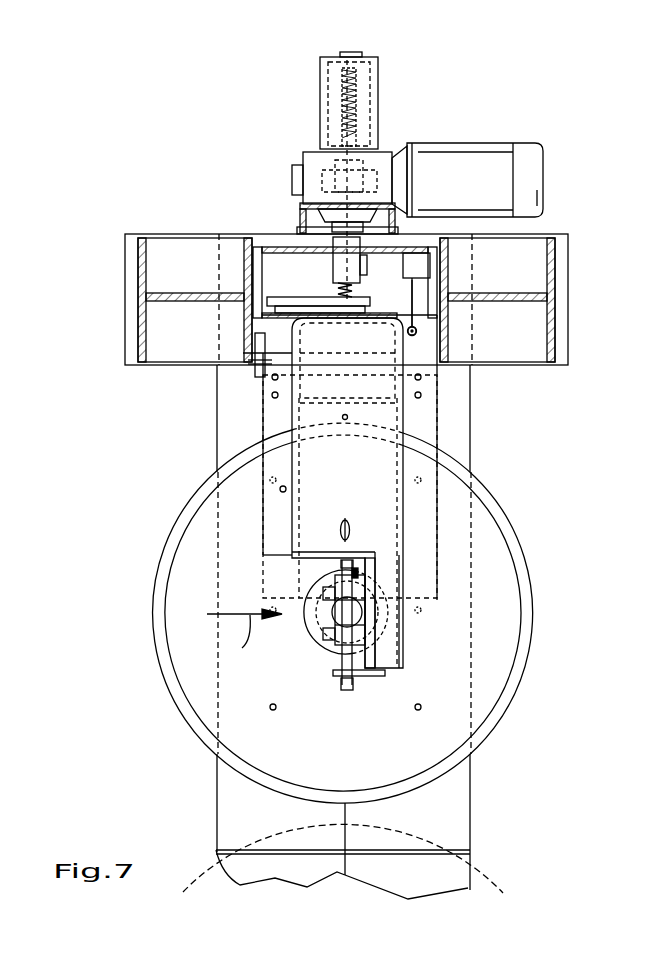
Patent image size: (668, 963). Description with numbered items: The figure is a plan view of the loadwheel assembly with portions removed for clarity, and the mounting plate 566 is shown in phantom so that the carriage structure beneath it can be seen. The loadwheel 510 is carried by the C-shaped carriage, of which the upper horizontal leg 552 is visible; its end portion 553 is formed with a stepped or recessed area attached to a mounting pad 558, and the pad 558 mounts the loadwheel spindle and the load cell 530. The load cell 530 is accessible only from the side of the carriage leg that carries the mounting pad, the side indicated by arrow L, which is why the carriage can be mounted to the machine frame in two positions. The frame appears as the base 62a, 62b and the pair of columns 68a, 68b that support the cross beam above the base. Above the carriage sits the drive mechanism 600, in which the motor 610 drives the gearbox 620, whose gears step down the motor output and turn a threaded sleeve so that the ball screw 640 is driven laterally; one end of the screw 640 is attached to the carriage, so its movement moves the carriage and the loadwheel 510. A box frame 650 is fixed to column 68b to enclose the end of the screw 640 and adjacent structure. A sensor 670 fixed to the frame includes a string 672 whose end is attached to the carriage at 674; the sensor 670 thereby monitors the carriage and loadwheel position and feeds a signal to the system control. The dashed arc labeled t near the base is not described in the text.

The drive mechanism 600 is at (395, 143).
The threaded male member 640 is at (345, 103).
The gearbox 620 is at (320, 162).
The motor 610 is at (500, 153).
The box frame 650 is at (270, 247).
The sensor 670 is at (423, 253).
The string 672 is at (410, 295).
The string attachment point 674 is at (408, 330).
The column 68a is at (145, 282).
The column 68b is at (556, 292).
The mounting plate 566 is at (420, 413).
The upper horizontal leg 552 is at (375, 498).
The loadwheel 510 is at (530, 532).
The end portion 553 is at (388, 655).
The load cell 530 is at (350, 637).
The mounting pad 558 is at (368, 672).
The base 62a is at (240, 808).
The base 62b is at (450, 815).
The tread line t is at (512, 847).
The arrow L is at (244, 635).